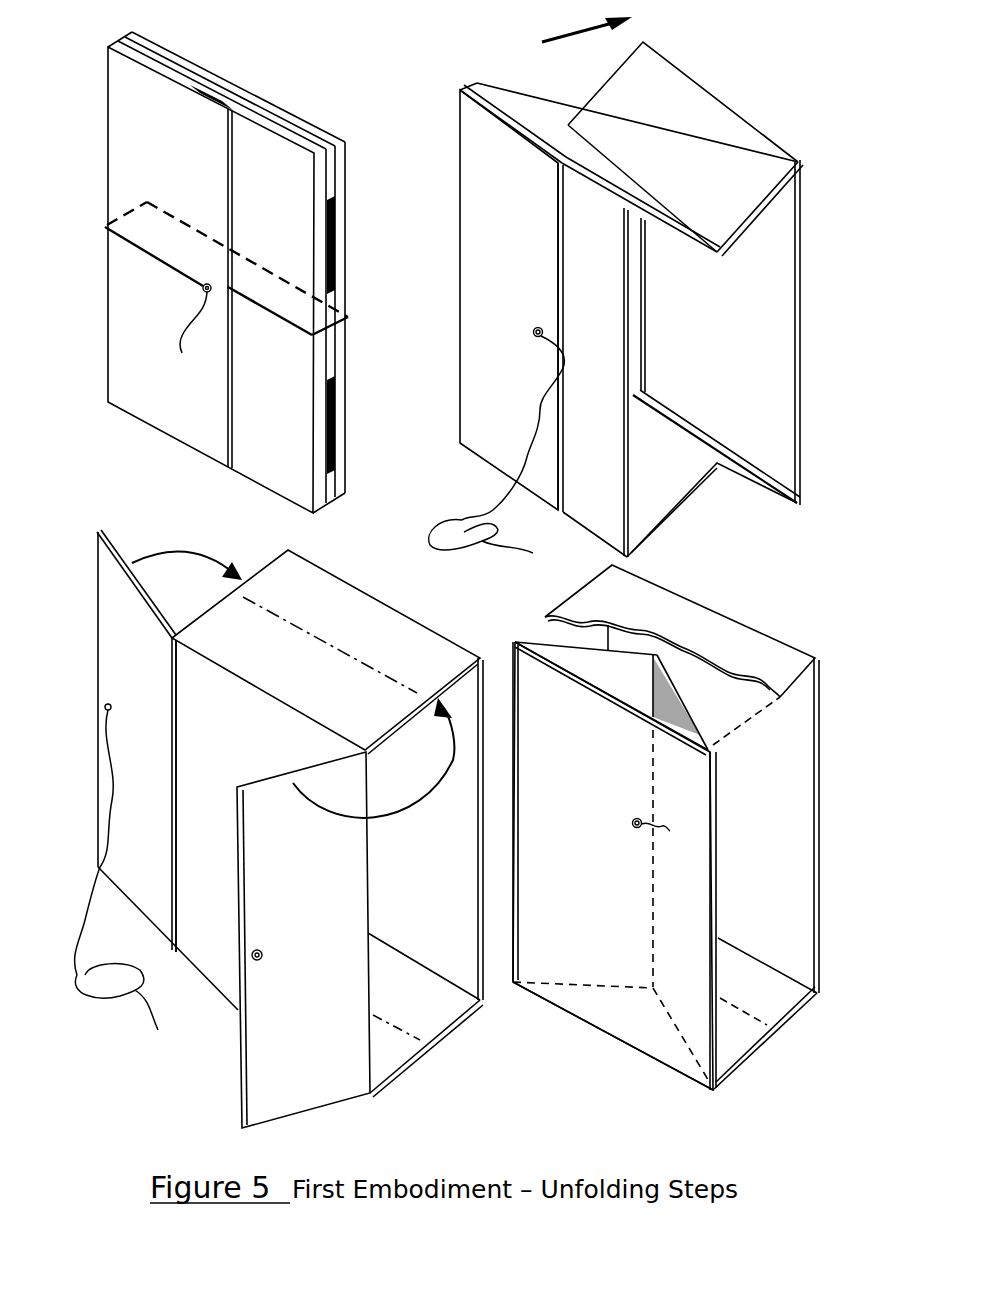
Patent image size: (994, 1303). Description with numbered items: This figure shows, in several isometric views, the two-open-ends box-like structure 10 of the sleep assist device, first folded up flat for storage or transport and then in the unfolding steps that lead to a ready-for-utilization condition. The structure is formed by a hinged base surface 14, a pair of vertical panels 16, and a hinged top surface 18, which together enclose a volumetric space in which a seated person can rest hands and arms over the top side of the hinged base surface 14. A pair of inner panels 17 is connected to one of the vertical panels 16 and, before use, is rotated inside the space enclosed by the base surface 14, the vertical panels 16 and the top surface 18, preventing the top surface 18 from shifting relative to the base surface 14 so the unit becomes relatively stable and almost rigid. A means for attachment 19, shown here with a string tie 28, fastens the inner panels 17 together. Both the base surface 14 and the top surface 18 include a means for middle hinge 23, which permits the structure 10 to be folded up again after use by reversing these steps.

The two-open-ends box-like structure 10 is at (272, 81).
The hinged base surface 14 is at (415, 993).
The vertical panel 16 is at (743, 393).
The inner panel 17 is at (177, 385).
The hinged top surface 18 is at (657, 117).
The means for attachment 19 is at (204, 291).
The means for middle hinge 23 is at (637, 185).
The string tie 28 is at (155, 258).